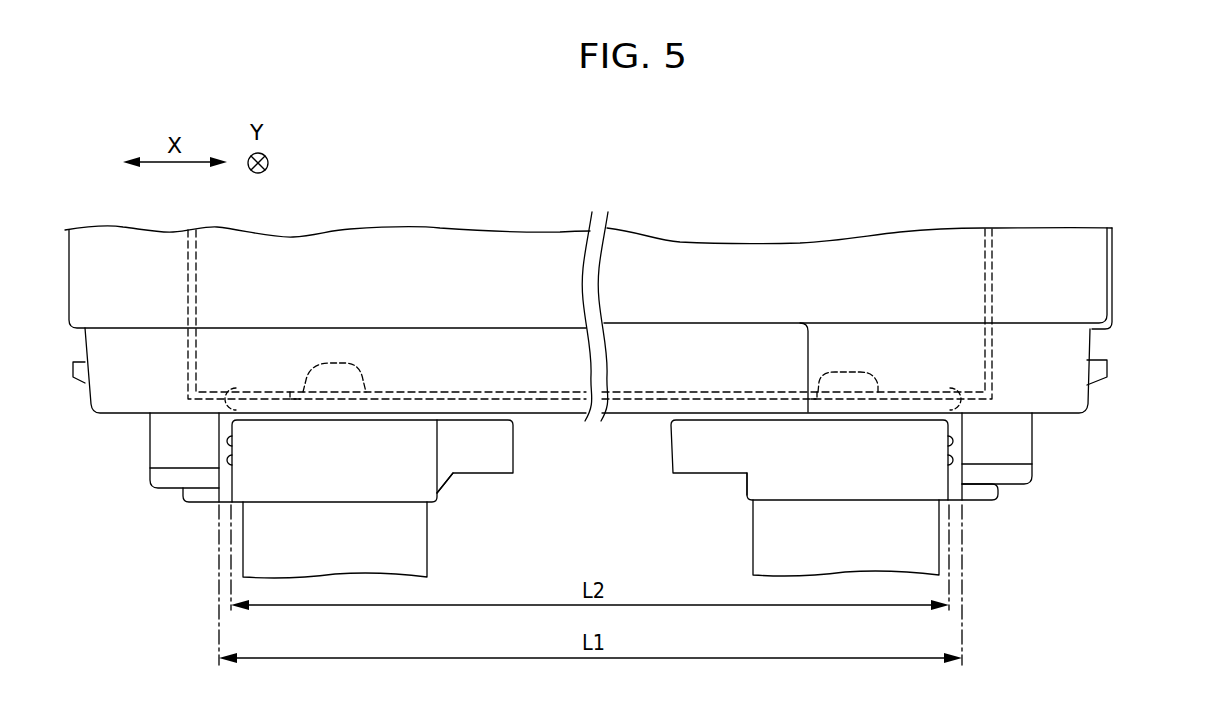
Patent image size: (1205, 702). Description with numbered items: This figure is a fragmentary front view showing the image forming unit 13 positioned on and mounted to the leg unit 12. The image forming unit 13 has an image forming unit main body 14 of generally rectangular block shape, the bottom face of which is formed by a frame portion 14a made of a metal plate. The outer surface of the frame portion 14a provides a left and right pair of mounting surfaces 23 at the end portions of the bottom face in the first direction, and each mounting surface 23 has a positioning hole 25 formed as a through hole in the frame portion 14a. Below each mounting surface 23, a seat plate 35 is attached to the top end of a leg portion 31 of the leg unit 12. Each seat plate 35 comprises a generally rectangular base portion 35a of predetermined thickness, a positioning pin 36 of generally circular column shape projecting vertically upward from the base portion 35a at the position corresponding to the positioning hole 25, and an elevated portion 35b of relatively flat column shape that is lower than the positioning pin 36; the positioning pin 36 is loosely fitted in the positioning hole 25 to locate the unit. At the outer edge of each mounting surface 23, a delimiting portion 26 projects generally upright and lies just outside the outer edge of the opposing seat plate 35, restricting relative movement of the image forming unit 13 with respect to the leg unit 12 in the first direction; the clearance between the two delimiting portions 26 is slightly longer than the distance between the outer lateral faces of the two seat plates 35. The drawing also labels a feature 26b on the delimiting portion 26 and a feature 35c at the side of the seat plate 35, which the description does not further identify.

The leg unit 12 is at (1015, 509).
The image forming unit 13 is at (1130, 316).
The image forming unit main body 14 is at (1113, 248).
The frame portion 14a is at (550, 400).
The mounting surface 23 is at (395, 400).
The positioning hole 25 is at (296, 391).
The delimiting portion 26 is at (150, 432).
The step portion 26b is at (150, 468).
The leg portion 31 is at (427, 560).
The seat plate 35 is at (358, 497).
The base portion 35a is at (420, 492).
The elevated portion 35b is at (224, 390).
The engagement protrusion 35c is at (232, 447).
The positioning pin 36 is at (350, 363).